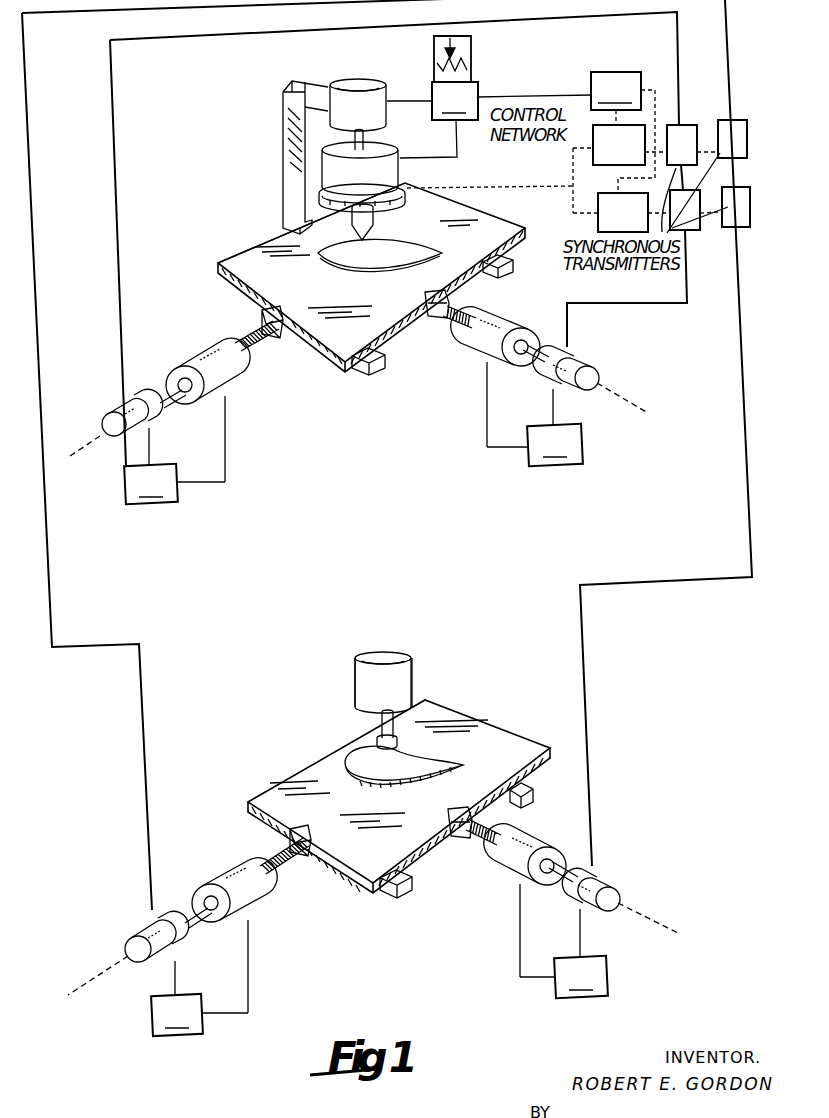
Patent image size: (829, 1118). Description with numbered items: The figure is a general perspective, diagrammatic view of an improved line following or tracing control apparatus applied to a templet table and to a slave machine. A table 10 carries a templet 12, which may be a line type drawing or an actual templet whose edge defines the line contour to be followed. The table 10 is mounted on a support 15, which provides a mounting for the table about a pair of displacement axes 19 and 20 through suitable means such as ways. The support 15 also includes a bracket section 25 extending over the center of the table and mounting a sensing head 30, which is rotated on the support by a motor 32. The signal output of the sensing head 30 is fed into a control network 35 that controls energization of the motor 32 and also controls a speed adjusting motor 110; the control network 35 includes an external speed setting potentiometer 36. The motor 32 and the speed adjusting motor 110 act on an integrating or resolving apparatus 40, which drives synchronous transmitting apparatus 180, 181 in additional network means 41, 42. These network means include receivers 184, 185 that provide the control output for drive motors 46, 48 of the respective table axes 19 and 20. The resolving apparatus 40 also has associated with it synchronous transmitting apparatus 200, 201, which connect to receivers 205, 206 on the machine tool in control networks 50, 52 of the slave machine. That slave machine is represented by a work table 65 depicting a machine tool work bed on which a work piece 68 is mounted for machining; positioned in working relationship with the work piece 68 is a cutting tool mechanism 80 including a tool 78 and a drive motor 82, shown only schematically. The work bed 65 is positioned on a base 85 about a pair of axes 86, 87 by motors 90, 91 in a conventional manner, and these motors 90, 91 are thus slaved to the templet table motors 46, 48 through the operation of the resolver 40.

The table 10 is at (327, 374).
The templet 12 is at (350, 262).
The support 15 is at (276, 238).
The displacement axis 19 is at (98, 446).
The displacement axis 20 is at (630, 405).
The bracket section 25 is at (283, 120).
The sensing head 30 is at (420, 124).
The motor 32 is at (360, 80).
The control network 35 is at (468, 138).
The potentiometer 36 is at (474, 50).
The integrating apparatus 40 is at (612, 213).
The network means 41 is at (168, 488).
The network means 42 is at (540, 468).
The drive motor 46 is at (240, 368).
The drive motor 48 is at (524, 328).
The control network 50 is at (153, 1036).
The control network 52 is at (607, 972).
The work table 65 is at (340, 867).
The work piece 68 is at (438, 764).
The tool 78 is at (378, 740).
The cutting tool mechanism 80 is at (423, 688).
The drive motor 82 is at (385, 655).
The base 85 is at (412, 880).
The axis 86 is at (112, 966).
The axis 87 is at (644, 920).
The motor 90 is at (262, 898).
The motor 91 is at (538, 847).
The speed adjusting motor 110 is at (648, 55).
The synchronous transmitting apparatus 180 is at (681, 130).
The synchronous transmitting apparatus 181 is at (684, 198).
The receiver 184 is at (156, 412).
The receiver 185 is at (571, 360).
The synchronous transmitting apparatus 200 is at (722, 118).
The synchronous transmitting apparatus 201 is at (737, 195).
The receiver 205 is at (180, 930).
The receiver 206 is at (622, 868).